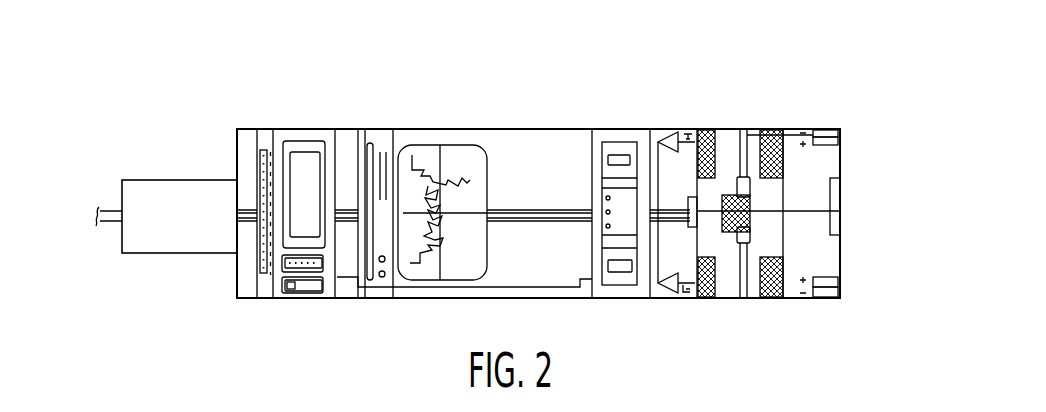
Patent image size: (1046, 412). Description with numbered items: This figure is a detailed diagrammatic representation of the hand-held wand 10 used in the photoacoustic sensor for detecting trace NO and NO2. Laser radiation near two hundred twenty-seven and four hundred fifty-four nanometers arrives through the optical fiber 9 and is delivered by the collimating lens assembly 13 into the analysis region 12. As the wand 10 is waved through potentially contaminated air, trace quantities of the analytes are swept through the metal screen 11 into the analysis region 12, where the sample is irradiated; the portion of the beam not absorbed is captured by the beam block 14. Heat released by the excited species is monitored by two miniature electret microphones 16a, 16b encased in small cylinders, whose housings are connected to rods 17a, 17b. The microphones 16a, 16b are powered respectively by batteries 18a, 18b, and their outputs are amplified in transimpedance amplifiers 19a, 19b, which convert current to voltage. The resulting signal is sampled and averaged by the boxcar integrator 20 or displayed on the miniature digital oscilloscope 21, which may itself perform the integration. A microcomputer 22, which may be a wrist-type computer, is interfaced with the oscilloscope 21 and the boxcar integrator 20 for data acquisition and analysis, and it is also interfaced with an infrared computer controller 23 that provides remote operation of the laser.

The optical fiber 9 is at (110, 222).
The hand-held wand 10 is at (650, 58).
The metal screen 11 is at (746, 157).
The analysis region 12 is at (712, 192).
The collimating lens assembly 13 is at (692, 228).
The beam block 14 is at (842, 212).
The microphone 16a is at (737, 178).
The microphone 16b is at (742, 245).
The rod 17a is at (768, 150).
The rod 17b is at (750, 278).
The battery 18a is at (833, 158).
The battery 18b is at (797, 260).
The amplifier 19a is at (670, 130).
The amplifier 19b is at (676, 292).
The boxcar integrator 20 is at (620, 281).
The digital oscilloscope 21 is at (427, 273).
The microcomputer 22 is at (303, 160).
The infrared computer controller 23 is at (300, 270).